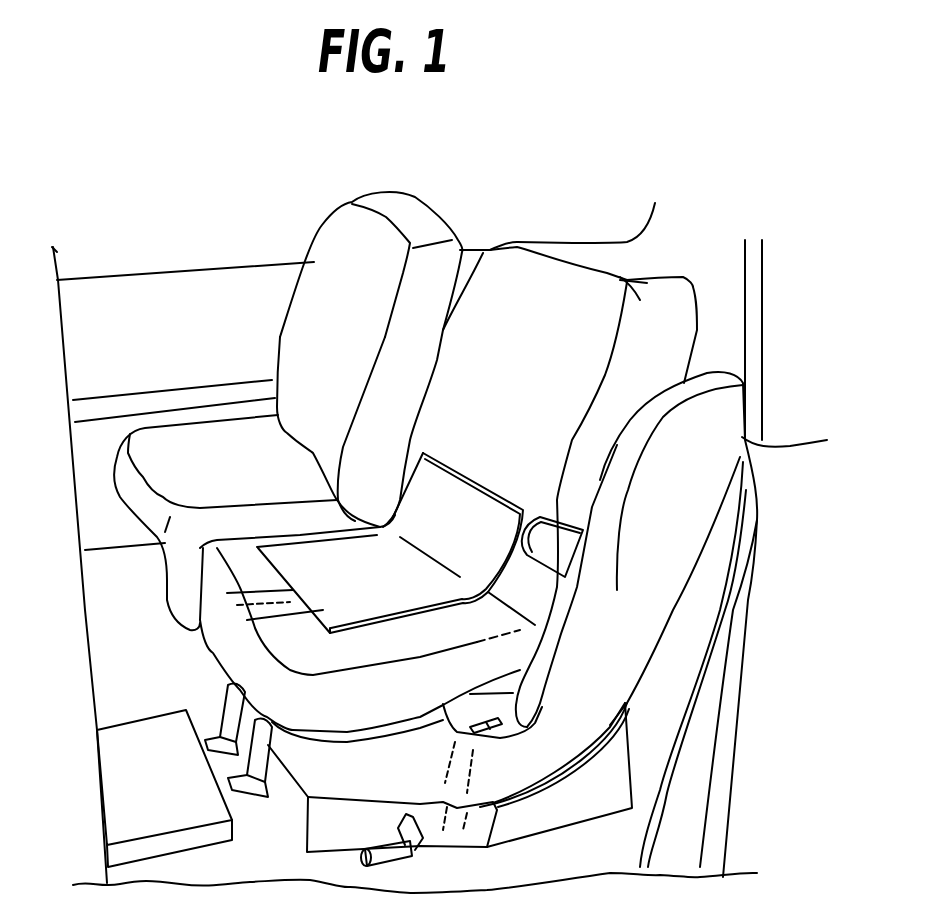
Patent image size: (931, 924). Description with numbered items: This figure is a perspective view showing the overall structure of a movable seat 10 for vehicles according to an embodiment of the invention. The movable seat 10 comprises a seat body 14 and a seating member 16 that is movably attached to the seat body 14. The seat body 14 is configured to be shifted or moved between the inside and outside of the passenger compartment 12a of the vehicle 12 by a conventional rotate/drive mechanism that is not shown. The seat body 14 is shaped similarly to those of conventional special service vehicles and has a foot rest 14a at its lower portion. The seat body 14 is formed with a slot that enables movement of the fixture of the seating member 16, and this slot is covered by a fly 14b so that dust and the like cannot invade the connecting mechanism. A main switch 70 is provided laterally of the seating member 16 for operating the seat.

The movable seat 10 is at (469, 274).
The vehicle 12 is at (670, 233).
The passenger compartment 12a is at (208, 347).
The seat body 14 is at (540, 287).
The foot rest 14a is at (123, 735).
The fly 14b is at (237, 618).
The seating member 16 is at (325, 553).
The main switch 70 is at (498, 731).